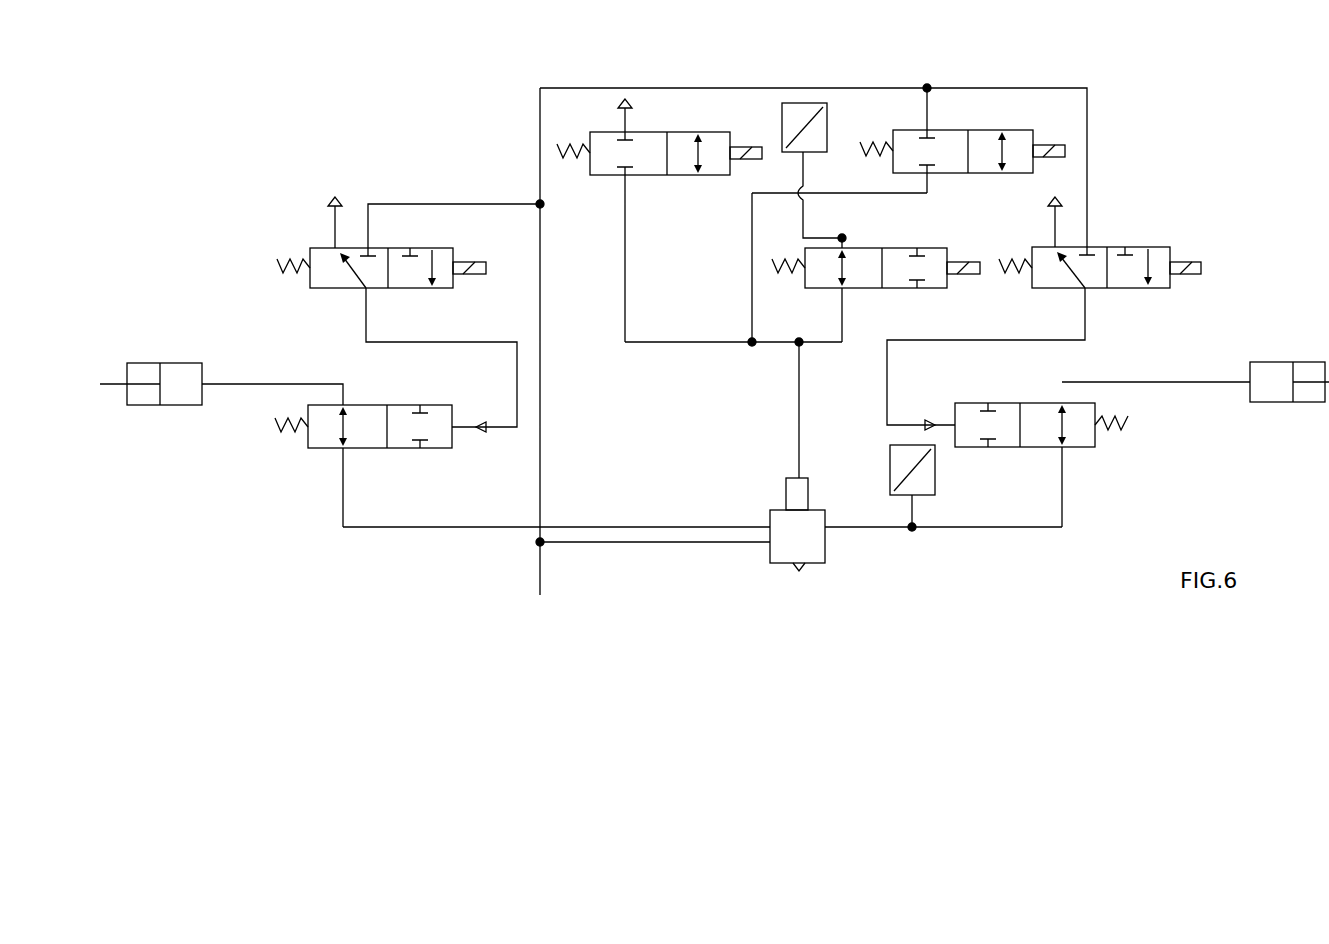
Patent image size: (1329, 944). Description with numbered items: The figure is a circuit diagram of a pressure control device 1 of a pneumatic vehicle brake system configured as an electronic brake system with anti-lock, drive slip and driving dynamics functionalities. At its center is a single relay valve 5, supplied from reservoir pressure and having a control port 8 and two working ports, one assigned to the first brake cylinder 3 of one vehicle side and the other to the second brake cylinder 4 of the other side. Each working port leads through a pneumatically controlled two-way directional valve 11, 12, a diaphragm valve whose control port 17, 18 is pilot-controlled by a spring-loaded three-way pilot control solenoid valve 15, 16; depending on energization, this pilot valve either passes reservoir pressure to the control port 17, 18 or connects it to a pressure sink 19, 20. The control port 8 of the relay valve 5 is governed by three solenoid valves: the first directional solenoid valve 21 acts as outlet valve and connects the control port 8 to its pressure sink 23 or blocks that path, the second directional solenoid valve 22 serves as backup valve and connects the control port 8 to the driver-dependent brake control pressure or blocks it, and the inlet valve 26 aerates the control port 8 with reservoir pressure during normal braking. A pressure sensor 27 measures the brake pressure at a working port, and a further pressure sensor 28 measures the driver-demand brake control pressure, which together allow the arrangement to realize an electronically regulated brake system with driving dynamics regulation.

The pressure control device 1 is at (1152, 69).
The first brake cylinder 3 is at (1268, 368).
The second brake cylinder 4 is at (184, 368).
The relay valve 5 is at (822, 560).
The control port 8 is at (803, 478).
The 2/2 directional valve 11 is at (1045, 404).
The 2/2 directional valve 12 is at (407, 447).
The 3/2 directional pilot control solenoid valve 15 is at (1141, 247).
The 3/2 directional pilot control solenoid valve 16 is at (345, 288).
The control port 17 is at (924, 420).
The control port 18 is at (481, 420).
The pressure sink 19 is at (1046, 203).
The pressure sink 20 is at (329, 203).
The first 2/2 directional solenoid valve 21 is at (685, 175).
The second 2/2 directional solenoid valve 22 is at (806, 288).
The pressure sink 23 is at (612, 108).
The inlet valve 26 is at (951, 136).
The pressure sensor 27 is at (935, 468).
The further pressure sensor 28 is at (827, 125).